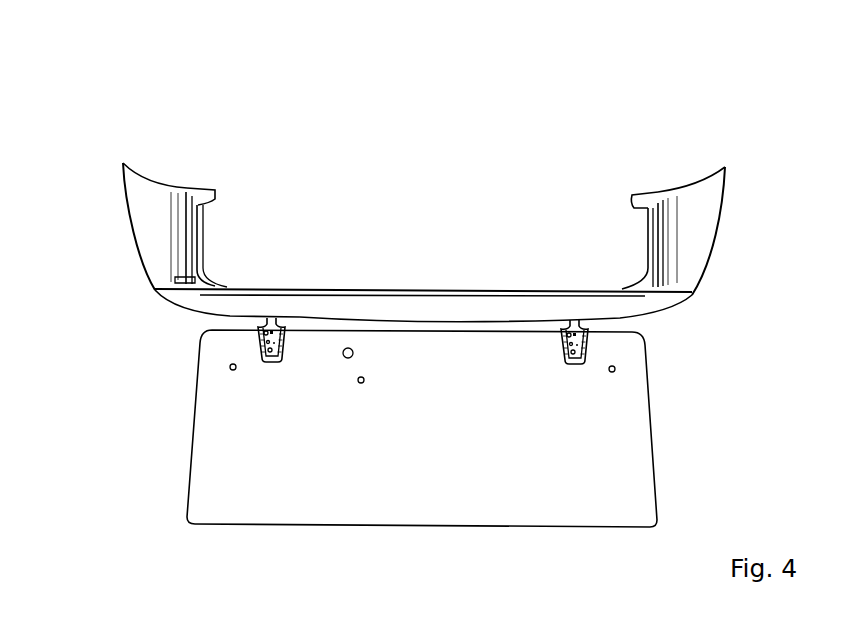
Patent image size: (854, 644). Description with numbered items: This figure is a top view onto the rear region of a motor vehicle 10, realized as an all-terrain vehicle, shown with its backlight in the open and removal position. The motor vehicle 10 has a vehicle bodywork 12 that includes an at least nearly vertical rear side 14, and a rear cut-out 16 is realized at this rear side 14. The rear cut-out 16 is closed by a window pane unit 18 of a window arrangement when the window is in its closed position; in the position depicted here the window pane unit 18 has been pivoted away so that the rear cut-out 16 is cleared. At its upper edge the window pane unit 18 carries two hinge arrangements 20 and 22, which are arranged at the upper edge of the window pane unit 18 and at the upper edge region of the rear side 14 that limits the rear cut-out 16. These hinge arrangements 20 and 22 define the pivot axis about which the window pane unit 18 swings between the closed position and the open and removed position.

The motor vehicle 10 is at (722, 135).
The vehicle bodywork 12 is at (645, 303).
The rear side 14 is at (198, 303).
The rear cut-out 16 is at (250, 290).
The window pane unit 18 is at (545, 470).
The hinge arrangement 20 is at (273, 325).
The hinge arrangement 22 is at (573, 327).